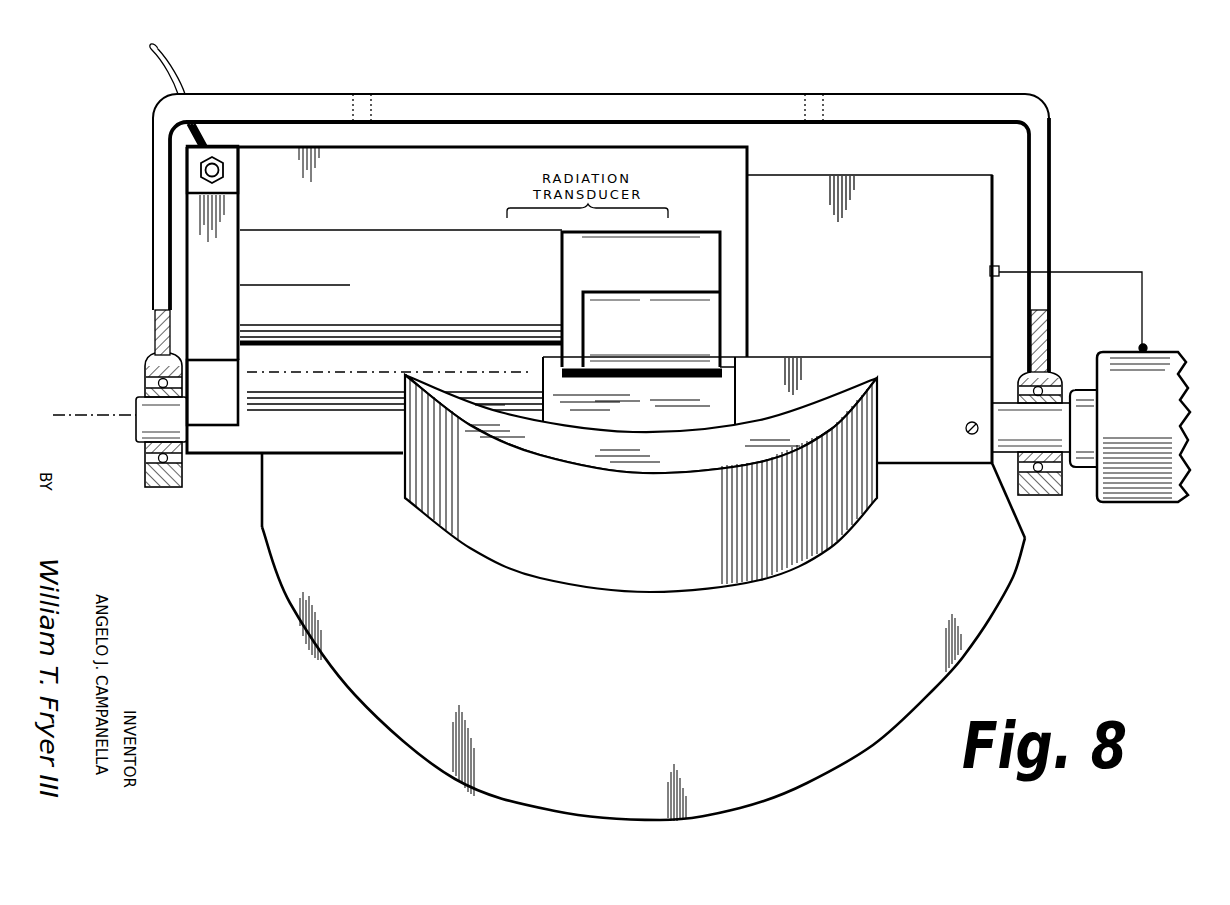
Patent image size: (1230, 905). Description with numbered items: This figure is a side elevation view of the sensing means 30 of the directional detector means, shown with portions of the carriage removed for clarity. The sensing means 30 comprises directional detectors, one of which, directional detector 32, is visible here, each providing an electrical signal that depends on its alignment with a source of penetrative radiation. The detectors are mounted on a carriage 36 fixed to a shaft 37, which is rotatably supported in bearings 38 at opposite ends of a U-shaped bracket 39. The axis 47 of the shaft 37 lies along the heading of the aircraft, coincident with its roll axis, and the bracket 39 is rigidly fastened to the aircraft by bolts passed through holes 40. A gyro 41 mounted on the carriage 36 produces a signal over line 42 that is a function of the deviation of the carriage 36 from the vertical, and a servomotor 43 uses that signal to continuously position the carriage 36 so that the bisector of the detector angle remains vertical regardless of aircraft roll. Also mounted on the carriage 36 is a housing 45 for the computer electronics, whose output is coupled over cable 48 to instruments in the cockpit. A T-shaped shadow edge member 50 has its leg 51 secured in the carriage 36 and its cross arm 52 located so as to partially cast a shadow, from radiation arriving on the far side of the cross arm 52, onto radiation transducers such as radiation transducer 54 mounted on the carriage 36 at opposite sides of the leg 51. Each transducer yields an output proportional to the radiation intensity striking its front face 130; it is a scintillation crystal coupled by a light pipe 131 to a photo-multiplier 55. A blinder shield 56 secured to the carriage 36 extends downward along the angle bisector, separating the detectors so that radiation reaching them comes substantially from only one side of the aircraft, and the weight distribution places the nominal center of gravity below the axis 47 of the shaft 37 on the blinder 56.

The sensing means 30 is at (1070, 568).
The directional detector 32 is at (300, 540).
The carriage 36 is at (975, 382).
The shaft 37 is at (140, 402).
The bearings 38 is at (145, 468).
The U-shaped bracket 39 is at (1052, 120).
The holes 40 is at (362, 94).
The gyro 41 is at (985, 224).
The line 42 is at (1086, 272).
The servomotor 43 is at (1128, 360).
The housing 45 is at (187, 172).
The axis 47 is at (70, 414).
The cable 48 is at (184, 72).
The shadow edge member 50 is at (498, 556).
The leg 51 is at (650, 420).
The cross arm 52 is at (612, 566).
The radiation transducer 54 is at (724, 286).
The photo-multiplier 55 is at (360, 230).
The blinder shield 56 is at (983, 620).
The front face 130 is at (646, 338).
The light pipe 131 is at (562, 262).